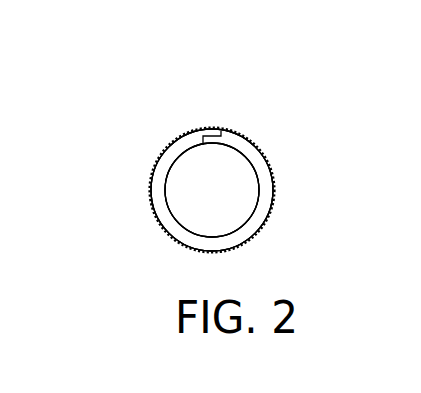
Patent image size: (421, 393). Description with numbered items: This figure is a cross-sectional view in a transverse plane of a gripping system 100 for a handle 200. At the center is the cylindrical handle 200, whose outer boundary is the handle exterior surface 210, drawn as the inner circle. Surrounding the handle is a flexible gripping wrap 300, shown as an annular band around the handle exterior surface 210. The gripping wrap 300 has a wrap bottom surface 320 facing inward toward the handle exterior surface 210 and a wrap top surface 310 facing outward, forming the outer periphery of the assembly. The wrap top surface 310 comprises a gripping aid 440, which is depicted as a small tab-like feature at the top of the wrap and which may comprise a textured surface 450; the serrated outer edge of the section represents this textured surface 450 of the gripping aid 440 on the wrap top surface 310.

The gripping system 100 is at (145, 97).
The handle 200 is at (218, 180).
The handle exterior surface 210 is at (258, 183).
The flexible gripping wrap 300 is at (152, 194).
The wrap top surface 310 is at (174, 240).
The wrap bottom surface 320 is at (260, 215).
The gripping aid 440 is at (203, 131).
The textured surface 450 is at (160, 152).